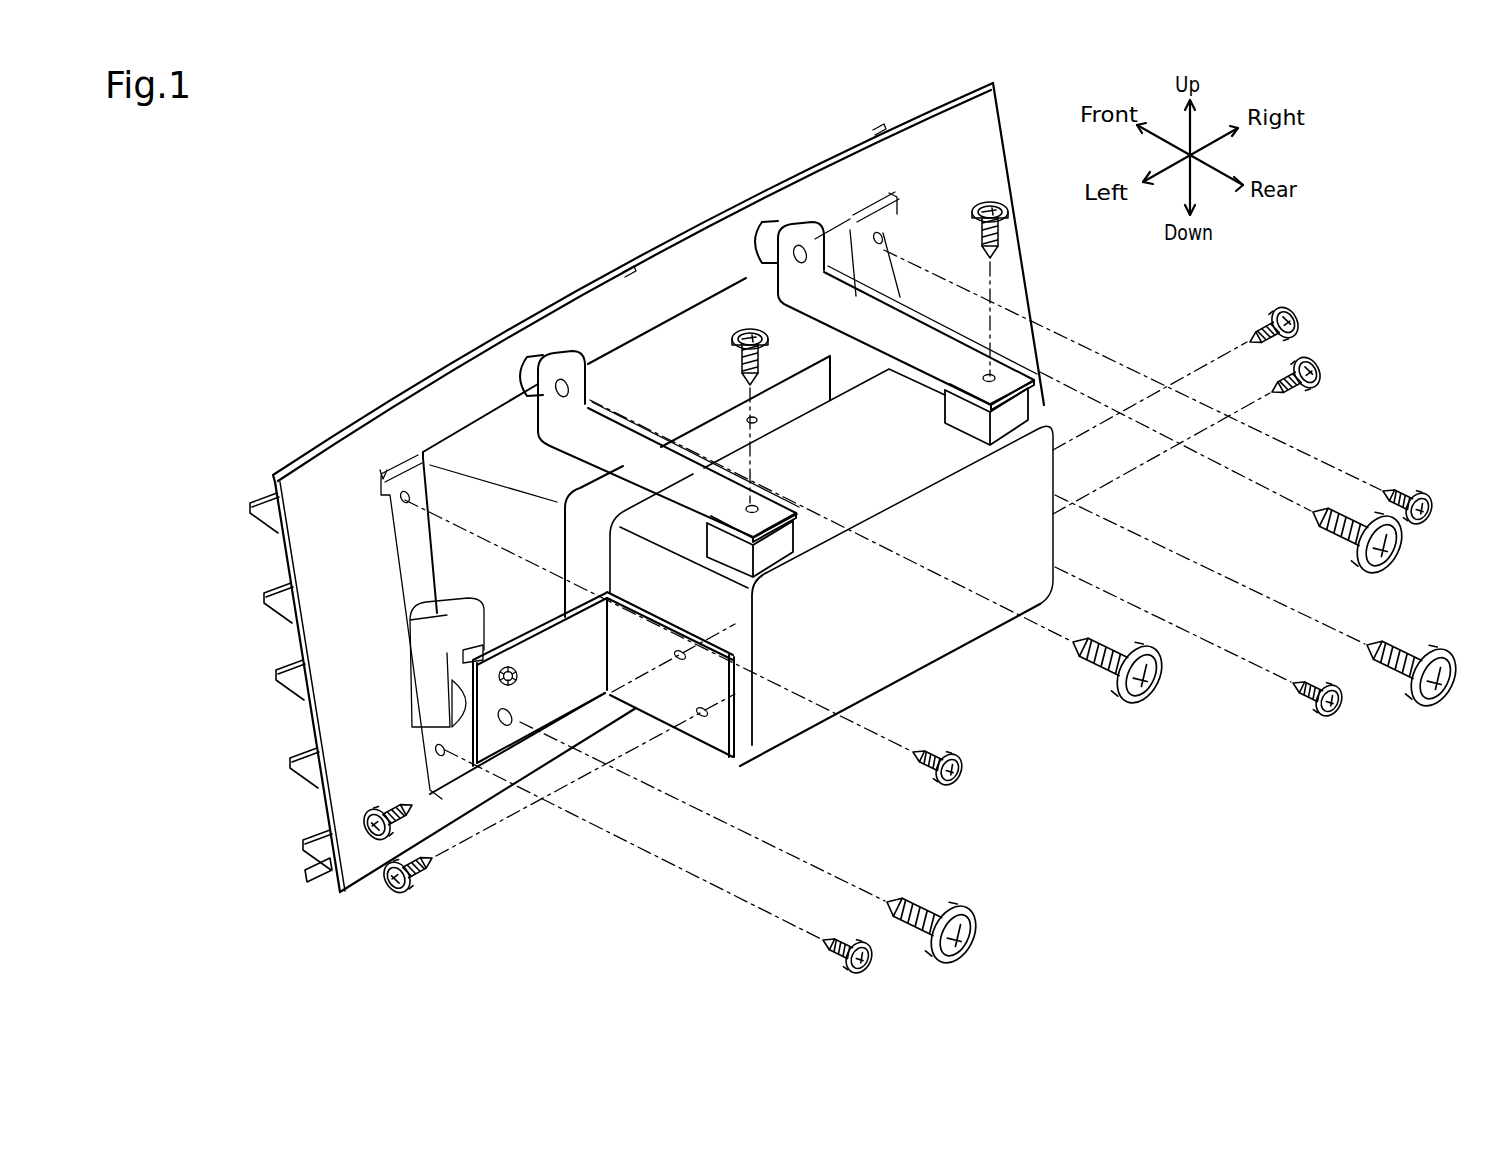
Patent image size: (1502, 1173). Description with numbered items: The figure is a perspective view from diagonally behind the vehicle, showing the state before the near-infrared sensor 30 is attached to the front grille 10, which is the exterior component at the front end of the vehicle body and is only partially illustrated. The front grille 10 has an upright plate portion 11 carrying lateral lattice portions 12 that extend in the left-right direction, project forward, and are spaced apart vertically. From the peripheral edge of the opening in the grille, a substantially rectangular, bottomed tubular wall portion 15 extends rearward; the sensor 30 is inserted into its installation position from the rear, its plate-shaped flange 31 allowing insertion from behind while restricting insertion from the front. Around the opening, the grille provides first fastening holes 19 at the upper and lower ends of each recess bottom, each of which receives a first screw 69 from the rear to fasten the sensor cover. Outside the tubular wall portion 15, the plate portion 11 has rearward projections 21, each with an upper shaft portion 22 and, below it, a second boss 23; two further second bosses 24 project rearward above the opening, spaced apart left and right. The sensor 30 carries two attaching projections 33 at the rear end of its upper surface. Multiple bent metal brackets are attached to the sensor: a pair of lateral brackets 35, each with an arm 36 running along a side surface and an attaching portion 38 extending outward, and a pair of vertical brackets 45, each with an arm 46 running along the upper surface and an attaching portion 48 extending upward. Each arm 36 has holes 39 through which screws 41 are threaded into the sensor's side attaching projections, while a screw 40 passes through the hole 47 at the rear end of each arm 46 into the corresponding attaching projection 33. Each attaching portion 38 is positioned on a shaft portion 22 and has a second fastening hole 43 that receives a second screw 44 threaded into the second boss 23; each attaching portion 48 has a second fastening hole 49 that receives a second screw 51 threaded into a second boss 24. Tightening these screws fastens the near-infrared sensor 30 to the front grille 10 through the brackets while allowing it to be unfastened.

The front grille 10 is at (226, 392).
The plate portion 11 is at (332, 465).
The lateral lattice portions 12 is at (258, 500).
The tubular wall portion 15 is at (480, 435).
The first fastening holes 19 is at (398, 500).
The projections 21 is at (412, 620).
The shaft portion 22 is at (442, 662).
The second boss 23 is at (445, 690).
The second bosses 24 is at (766, 240).
The near-infrared sensor 30 is at (822, 415).
The flange 31 is at (750, 418).
The attaching projections 33 is at (715, 540).
The lateral brackets 35 is at (627, 693).
The arm 36 is at (627, 693).
The attaching portion 38 is at (542, 662).
The holes 39 is at (700, 708).
The screw 40 is at (998, 236).
The screw 41 is at (1320, 375).
The second fastening hole 43 is at (513, 713).
The second screw 44 is at (1412, 662).
The vertical brackets 45 is at (815, 357).
The arm 46 is at (815, 357).
The hole 47 is at (986, 385).
The attaching portion 48 is at (810, 262).
The second fastening hole 49 is at (795, 262).
The second screw 51 is at (1330, 530).
The first screw 69 is at (1407, 500).